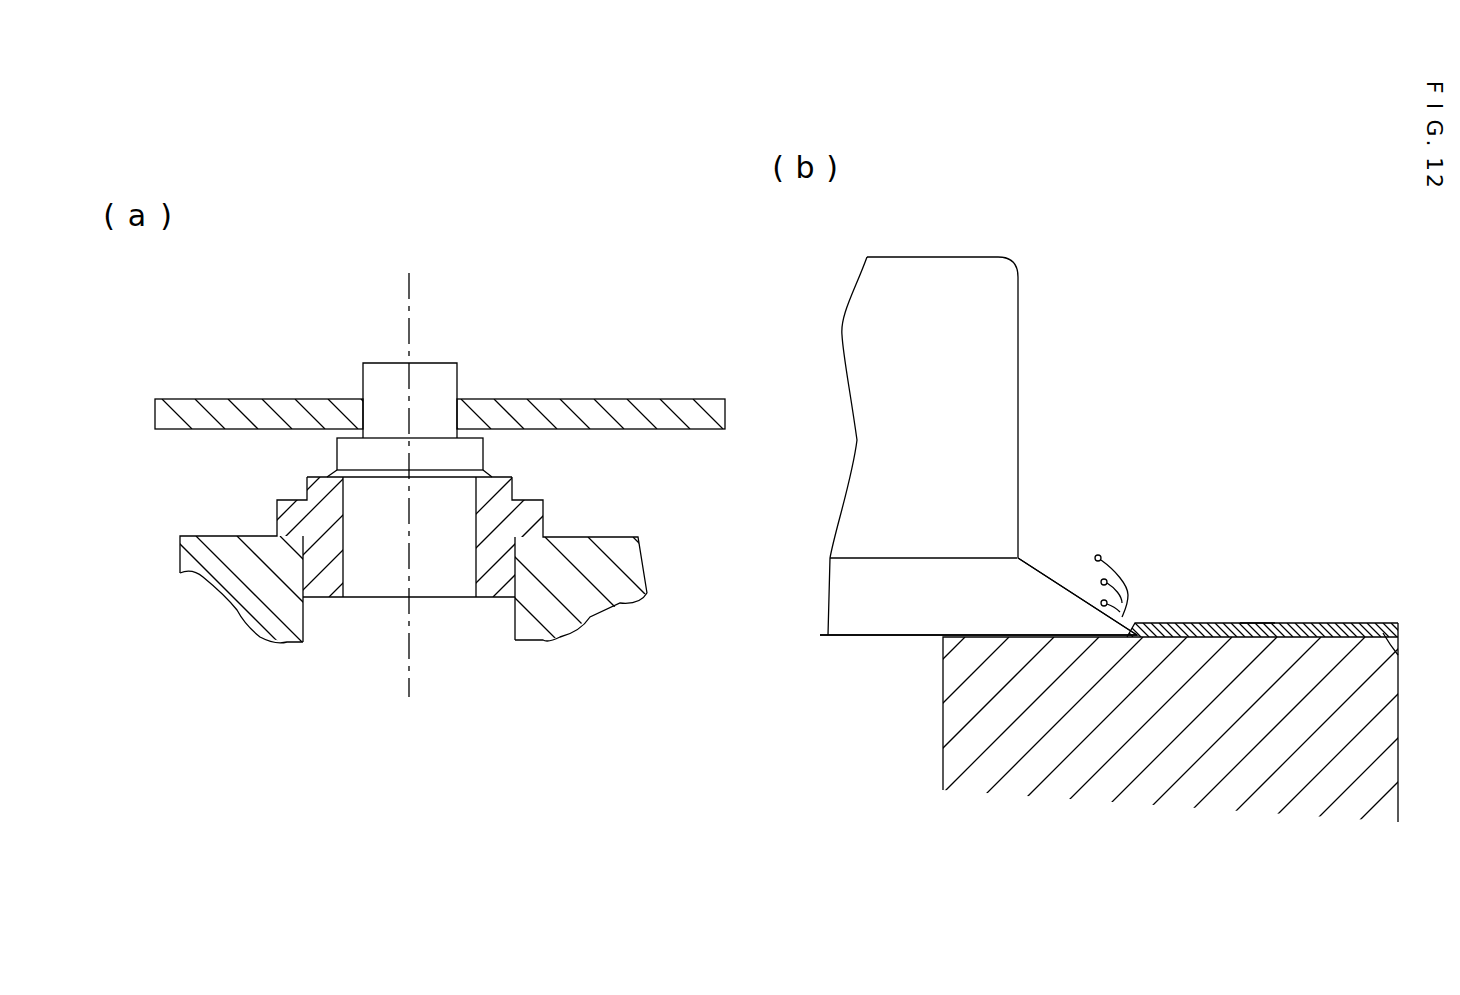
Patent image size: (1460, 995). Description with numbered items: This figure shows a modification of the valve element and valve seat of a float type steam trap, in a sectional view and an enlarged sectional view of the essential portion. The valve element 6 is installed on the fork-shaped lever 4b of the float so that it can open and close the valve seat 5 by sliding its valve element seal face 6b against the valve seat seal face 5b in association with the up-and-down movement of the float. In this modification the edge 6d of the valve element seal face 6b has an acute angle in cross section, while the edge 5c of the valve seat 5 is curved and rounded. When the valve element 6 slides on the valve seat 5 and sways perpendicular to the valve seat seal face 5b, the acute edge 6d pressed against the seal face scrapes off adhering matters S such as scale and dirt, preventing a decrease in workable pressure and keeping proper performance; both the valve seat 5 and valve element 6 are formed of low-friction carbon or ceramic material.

The valve element 6 is at (380, 373).
The lever 4b is at (610, 403).
The valve seat 5 is at (290, 497).
The valve element seal face 6b is at (893, 640).
The edge 6d is at (1105, 630).
The valve seat seal face 5b is at (1207, 622).
The adhering matters S is at (1257, 623).
The edge 5c is at (1383, 633).